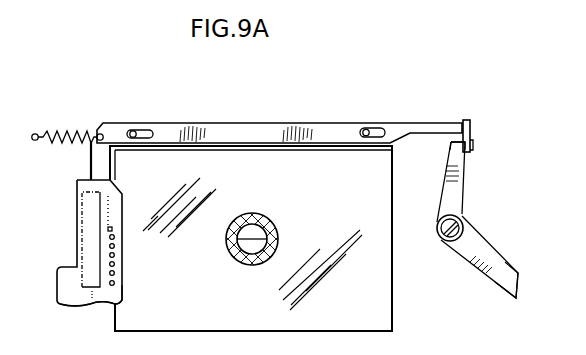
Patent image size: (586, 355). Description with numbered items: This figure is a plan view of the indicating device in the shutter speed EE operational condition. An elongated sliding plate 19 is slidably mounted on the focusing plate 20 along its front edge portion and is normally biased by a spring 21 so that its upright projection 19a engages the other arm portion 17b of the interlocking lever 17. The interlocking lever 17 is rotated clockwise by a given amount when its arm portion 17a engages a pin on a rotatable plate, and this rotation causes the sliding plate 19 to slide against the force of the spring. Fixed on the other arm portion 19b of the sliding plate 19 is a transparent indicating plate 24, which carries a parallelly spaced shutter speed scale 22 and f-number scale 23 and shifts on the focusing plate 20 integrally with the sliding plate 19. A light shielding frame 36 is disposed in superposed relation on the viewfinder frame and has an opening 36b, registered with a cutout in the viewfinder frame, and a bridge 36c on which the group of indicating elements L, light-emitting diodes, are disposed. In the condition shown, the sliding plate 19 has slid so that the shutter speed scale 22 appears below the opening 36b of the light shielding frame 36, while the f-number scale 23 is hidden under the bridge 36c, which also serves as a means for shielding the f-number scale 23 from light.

The interlocking lever 17 is at (464, 197).
The arm portion of interlocking lever 17a is at (508, 290).
The other arm portion of interlocking lever 17b is at (470, 147).
The sliding plate 19 is at (245, 133).
The upright projection 19a is at (468, 127).
The other arm portion of sliding plate 19b is at (88, 158).
The focusing plate 20 is at (370, 318).
The spring 21 is at (65, 133).
The shutter speed scale 22 is at (87, 248).
The f-number scale 23 is at (108, 229).
The transparent indicating plate 24 is at (82, 185).
The light shielding frame 36 is at (68, 282).
The opening 36b is at (93, 287).
The bridge 36c is at (110, 293).
The group of indicating elements L is at (115, 237).